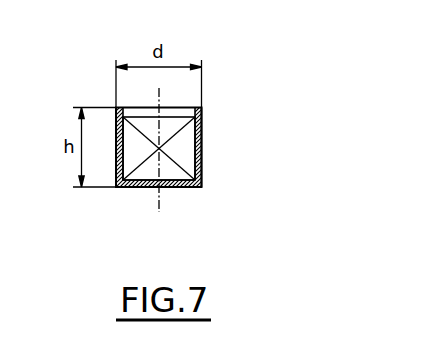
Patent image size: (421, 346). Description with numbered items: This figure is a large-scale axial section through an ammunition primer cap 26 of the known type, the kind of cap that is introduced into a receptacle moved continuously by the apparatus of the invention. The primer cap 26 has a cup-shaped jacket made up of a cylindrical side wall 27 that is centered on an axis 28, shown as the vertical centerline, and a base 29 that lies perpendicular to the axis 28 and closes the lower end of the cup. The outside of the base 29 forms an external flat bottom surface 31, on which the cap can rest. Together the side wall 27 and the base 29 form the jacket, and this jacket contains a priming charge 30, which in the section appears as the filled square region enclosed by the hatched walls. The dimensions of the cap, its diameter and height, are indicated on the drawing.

The primer cap 26 is at (212, 162).
The cylindrical side wall 27 is at (202, 125).
The axis 28 is at (156, 198).
The base 29 is at (188, 187).
The priming charge 30 is at (185, 148).
The external flat bottom surface 31 is at (127, 187).